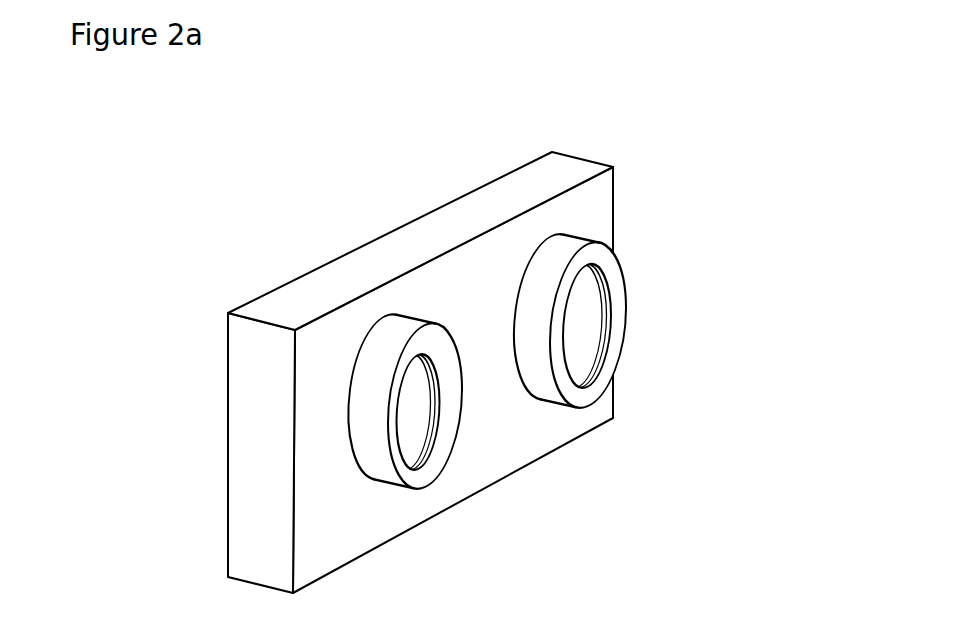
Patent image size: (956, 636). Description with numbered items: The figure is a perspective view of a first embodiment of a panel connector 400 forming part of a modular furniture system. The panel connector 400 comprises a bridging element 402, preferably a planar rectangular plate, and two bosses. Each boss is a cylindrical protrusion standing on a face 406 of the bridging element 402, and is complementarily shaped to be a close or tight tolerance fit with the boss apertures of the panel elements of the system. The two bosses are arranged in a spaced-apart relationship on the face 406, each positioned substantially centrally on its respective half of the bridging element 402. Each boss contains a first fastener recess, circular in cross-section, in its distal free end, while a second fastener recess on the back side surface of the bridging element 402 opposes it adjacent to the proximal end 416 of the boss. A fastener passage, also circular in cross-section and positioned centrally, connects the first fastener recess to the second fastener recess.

The panel connector 400 is at (432, 341).
The bridging element 402 is at (468, 367).
The face 406 is at (553, 420).
The proximal end 416 is at (434, 332).